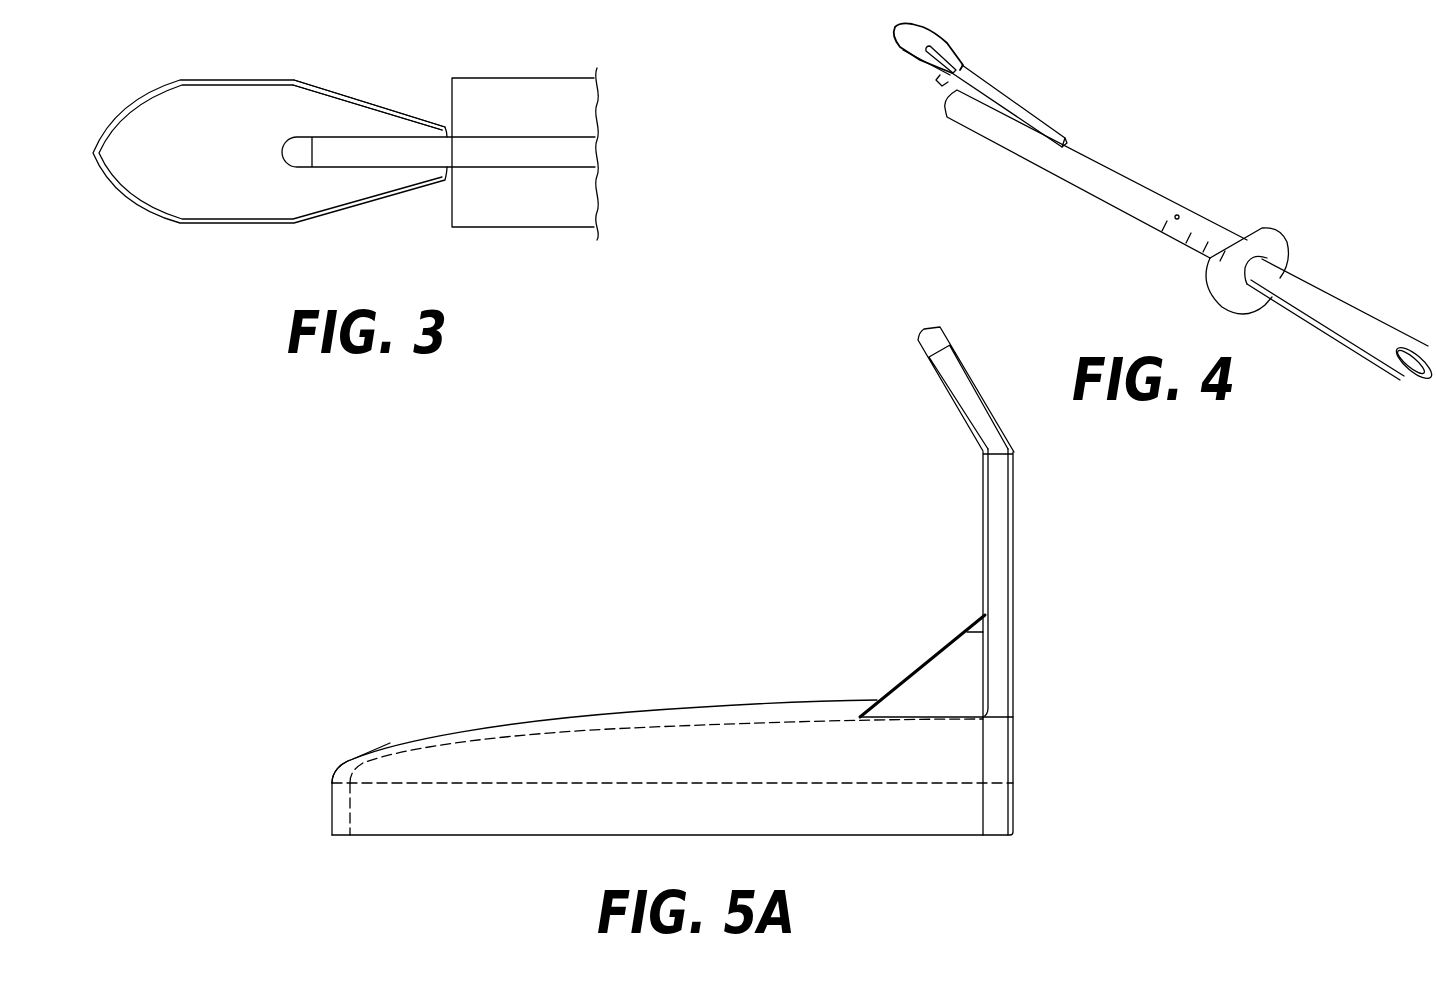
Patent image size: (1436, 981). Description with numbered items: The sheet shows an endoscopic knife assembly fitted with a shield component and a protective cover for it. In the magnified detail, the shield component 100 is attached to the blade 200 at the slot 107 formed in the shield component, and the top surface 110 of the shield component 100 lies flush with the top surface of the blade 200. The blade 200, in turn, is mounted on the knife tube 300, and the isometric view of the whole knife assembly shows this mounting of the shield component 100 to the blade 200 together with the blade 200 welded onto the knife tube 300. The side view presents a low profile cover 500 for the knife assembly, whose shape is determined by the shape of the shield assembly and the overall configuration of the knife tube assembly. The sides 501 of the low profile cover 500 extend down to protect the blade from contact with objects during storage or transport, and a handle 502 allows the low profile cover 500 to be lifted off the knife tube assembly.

In FIG. 3, the shield component 100 is at (193, 164).
In FIG. 3, the top surface of the shield component 110 is at (243, 125).
In FIG. 3, the slot 107 is at (338, 124).
In FIG. 3, the blade 200 is at (528, 155).
In FIG. 3, the knife tube 300 is at (528, 203).
In FIG. 5A, the low profile cover 500 is at (658, 773).
In FIG. 5A, the sides of the low profile cover 501 is at (330, 797).
In FIG. 5A, the handle 502 is at (1017, 497).